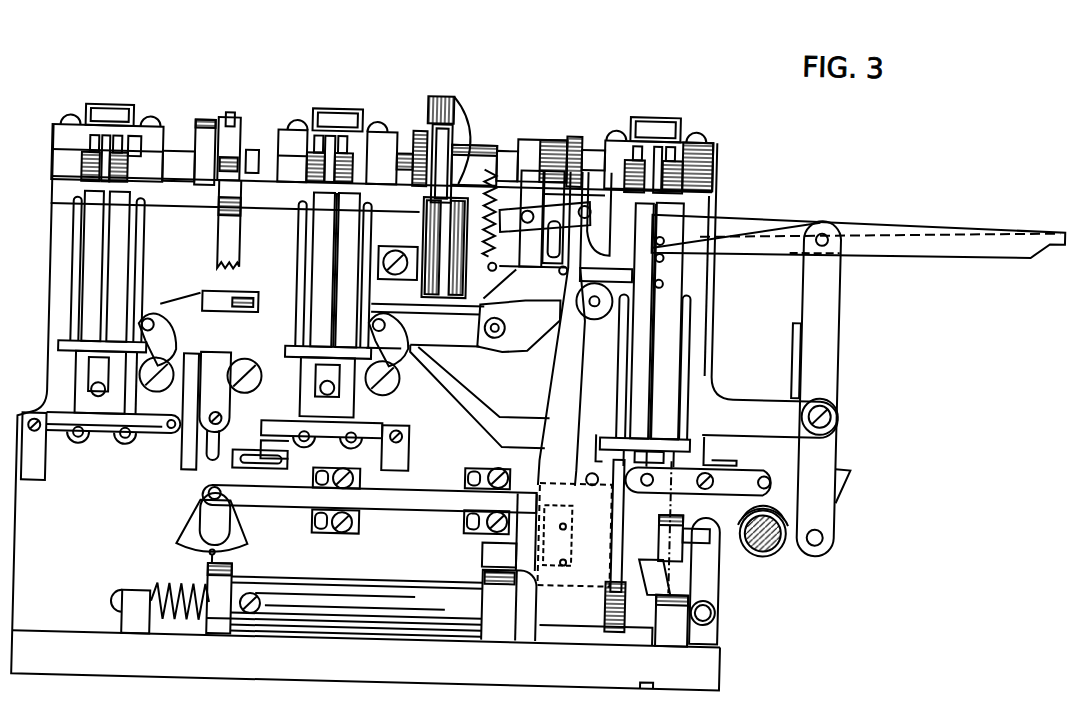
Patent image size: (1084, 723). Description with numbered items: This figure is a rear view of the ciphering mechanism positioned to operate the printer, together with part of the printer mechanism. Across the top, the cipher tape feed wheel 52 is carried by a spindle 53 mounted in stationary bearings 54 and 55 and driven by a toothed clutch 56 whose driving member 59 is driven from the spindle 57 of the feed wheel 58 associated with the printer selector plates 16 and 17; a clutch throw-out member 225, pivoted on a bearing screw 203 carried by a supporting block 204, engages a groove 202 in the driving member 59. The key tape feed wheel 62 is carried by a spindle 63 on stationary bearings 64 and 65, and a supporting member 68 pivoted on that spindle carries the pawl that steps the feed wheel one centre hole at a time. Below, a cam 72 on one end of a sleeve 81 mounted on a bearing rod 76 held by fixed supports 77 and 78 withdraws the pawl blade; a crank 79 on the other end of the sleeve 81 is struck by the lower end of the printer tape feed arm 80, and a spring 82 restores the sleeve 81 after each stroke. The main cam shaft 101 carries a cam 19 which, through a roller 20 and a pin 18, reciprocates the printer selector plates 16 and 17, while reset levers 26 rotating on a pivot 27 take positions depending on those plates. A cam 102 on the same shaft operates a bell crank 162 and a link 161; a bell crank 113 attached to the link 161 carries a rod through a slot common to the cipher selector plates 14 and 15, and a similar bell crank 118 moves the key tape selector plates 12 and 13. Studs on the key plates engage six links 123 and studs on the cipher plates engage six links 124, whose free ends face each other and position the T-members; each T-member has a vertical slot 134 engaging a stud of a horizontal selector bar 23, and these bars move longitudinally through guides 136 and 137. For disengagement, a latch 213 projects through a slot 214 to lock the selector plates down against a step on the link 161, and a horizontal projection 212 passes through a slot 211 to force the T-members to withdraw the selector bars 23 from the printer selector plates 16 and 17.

The key tape selector plate 12 is at (85, 251).
The key tape selector plate 13 is at (112, 251).
The cipher selector plate 14 is at (311, 227).
The cipher selector plate 15 is at (344, 226).
The selector plate 16 is at (631, 343).
The selector plate 17 is at (664, 349).
The pin 18 is at (657, 479).
The cam 19 is at (752, 508).
The roller 20 is at (764, 465).
The horizontal selector bar 23 is at (415, 508).
The reset lever 26 is at (766, 240).
The pivot 27 is at (818, 226).
The tape feed wheel 52 is at (347, 151).
The spindle 53 is at (397, 156).
The stationary bearing 54 is at (378, 145).
The stationary bearing 55 is at (272, 157).
The toothed clutch 56 is at (411, 135).
The spindle 57 is at (580, 143).
The feed wheel 58 is at (665, 146).
The driving member 59 is at (489, 160).
The feed wheel 62 is at (117, 147).
The spindle 63 is at (180, 160).
The stationary bearing 64 is at (160, 133).
The stationary bearing 65 is at (46, 148).
The supporting member 68 is at (199, 130).
The cam 72 is at (236, 587).
The bearing rod 76 is at (115, 611).
The fixed support 77 is at (147, 642).
The fixed support 78 is at (528, 636).
The crank 79 is at (497, 555).
The printer tape feed arm 80 is at (565, 385).
The sleeve 81 is at (349, 595).
The spring 82 is at (168, 592).
The main cam shaft 101 is at (768, 552).
The cam 102 is at (800, 470).
The bell crank 113 is at (391, 347).
The bell crank 118 is at (163, 350).
The link 123 is at (109, 451).
The link 124 is at (368, 429).
The vertical slot 134 is at (213, 526).
The guide 136 is at (315, 494).
The guide 137 is at (211, 456).
The link 161 is at (461, 340).
The bell crank 162 is at (479, 325).
The groove 202 is at (442, 162).
The bearing screw 203 is at (428, 294).
The supporting block 204 is at (420, 233).
The slot 211 is at (246, 470).
The horizontal projection 212 is at (272, 474).
The latch 213 is at (236, 305).
The slot 214 is at (208, 303).
The clutch throw-out member 225 is at (445, 100).